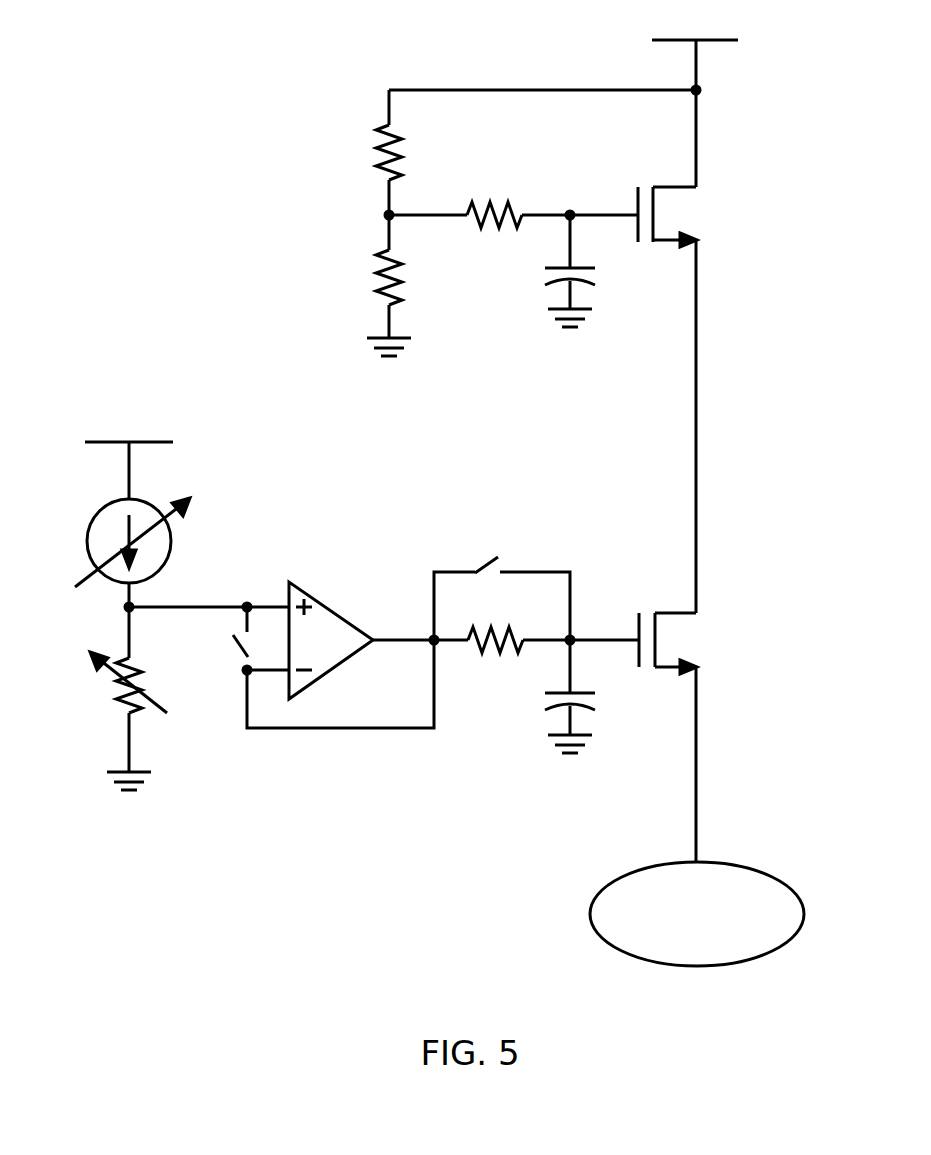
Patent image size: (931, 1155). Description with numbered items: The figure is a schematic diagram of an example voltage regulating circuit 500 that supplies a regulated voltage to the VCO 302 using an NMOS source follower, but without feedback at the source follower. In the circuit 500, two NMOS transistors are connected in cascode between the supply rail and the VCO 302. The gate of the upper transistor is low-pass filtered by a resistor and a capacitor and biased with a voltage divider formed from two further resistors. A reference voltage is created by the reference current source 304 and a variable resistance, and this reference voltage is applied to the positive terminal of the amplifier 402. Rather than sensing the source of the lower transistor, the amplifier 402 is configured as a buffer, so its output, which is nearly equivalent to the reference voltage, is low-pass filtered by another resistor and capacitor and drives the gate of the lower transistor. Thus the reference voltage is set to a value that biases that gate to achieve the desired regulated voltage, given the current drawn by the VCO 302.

The voltage regulating circuit 500 is at (434, 437).
The reference current source 304 is at (105, 507).
The operational amplifier 402 is at (310, 595).
The VCO 302 is at (640, 867).